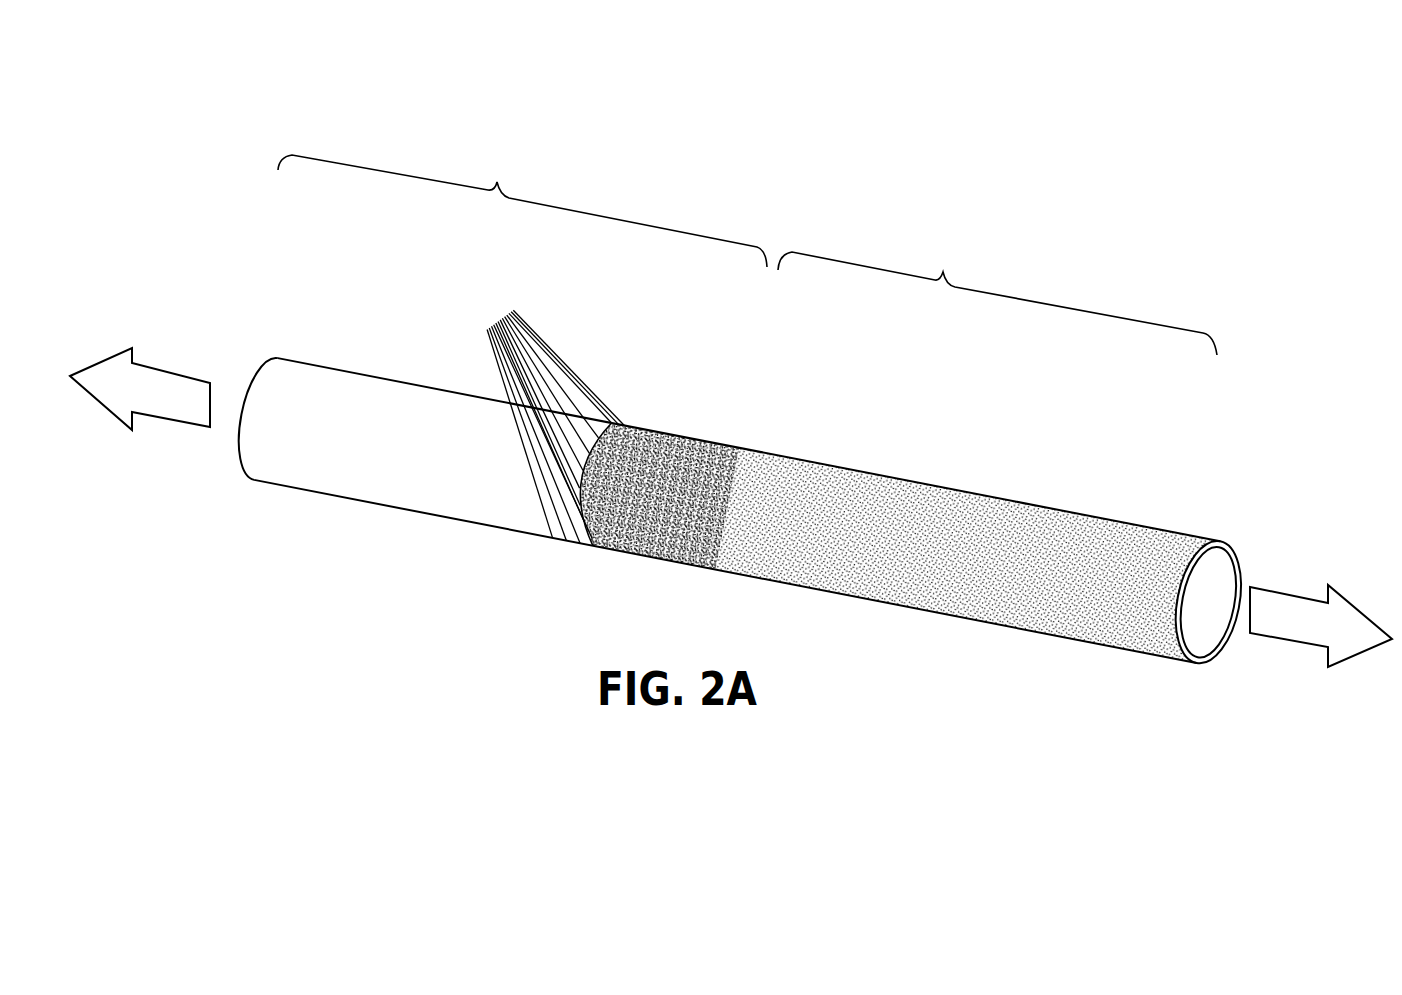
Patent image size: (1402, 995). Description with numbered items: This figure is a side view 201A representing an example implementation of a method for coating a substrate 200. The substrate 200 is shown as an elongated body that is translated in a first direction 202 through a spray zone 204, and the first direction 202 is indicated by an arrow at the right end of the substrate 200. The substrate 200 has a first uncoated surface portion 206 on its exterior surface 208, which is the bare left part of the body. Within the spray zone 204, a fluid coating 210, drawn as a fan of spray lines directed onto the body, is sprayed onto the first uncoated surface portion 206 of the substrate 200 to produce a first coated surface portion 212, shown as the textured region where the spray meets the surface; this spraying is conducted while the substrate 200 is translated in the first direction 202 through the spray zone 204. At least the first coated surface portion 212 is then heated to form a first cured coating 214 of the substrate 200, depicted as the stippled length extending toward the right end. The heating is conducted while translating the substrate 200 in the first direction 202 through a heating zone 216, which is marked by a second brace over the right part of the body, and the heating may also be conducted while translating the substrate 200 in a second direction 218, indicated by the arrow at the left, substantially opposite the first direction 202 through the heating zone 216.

The side view 201A is at (232, 114).
The substrate 200 is at (746, 455).
The first direction 202 is at (1310, 632).
The spray zone 204 is at (522, 210).
The first uncoated surface portion 206 is at (729, 459).
The exterior surface 208 is at (352, 372).
The fluid coating 210 is at (567, 360).
The first coated surface portion 212 is at (678, 443).
The first cured coating 214 is at (908, 507).
The heating zone 216 is at (997, 299).
The second direction 218 is at (193, 410).